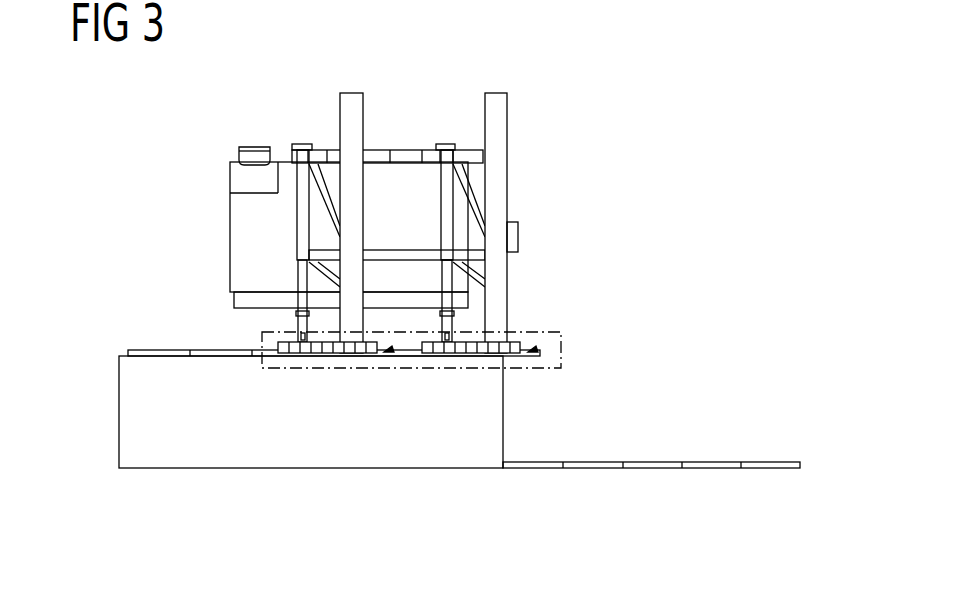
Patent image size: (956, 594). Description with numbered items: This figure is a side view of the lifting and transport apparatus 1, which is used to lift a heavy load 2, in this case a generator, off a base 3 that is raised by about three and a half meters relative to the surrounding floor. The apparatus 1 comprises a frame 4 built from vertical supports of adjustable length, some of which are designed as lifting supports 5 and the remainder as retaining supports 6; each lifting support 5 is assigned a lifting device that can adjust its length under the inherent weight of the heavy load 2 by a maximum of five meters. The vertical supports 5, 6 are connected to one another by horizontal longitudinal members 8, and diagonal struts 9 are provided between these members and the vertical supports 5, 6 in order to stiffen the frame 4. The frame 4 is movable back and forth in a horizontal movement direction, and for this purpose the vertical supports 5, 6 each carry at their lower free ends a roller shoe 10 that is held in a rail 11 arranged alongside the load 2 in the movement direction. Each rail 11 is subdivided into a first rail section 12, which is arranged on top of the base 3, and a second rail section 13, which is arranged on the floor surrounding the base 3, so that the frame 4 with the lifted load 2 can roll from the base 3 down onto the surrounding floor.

The lifting and transport apparatus 1 is at (727, 161).
The heavy load 2 is at (245, 248).
The base 3 is at (252, 450).
The frame 4 is at (527, 273).
The lifting support 5 is at (500, 118).
The retaining support 6 is at (300, 207).
The horizontal longitudinal member 8 is at (406, 157).
The diagonal strut 9 is at (473, 203).
The roller shoe 10 is at (302, 353).
The rail 11 is at (736, 430).
The first rail section 12 is at (160, 352).
The second rail section 13 is at (652, 468).